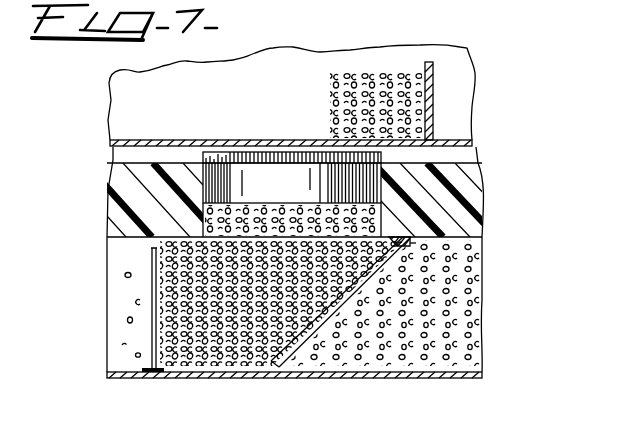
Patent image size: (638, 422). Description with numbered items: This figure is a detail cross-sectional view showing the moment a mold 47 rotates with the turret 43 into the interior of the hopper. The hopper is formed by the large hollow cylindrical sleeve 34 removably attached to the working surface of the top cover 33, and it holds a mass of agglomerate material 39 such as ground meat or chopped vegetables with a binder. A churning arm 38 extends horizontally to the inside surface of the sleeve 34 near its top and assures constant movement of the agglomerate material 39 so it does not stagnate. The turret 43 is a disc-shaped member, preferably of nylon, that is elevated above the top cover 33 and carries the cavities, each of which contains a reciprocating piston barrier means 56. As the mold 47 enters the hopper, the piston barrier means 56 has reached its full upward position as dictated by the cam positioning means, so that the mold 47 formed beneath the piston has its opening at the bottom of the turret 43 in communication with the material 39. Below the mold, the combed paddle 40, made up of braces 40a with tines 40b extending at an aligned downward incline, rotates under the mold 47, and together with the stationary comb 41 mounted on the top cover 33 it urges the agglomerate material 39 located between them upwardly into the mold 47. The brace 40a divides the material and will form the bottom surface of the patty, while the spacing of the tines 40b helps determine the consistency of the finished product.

The top cover 33 is at (460, 381).
The cylindrical sleeve 34 is at (533, 302).
The churning arm 38 is at (440, 102).
The agglomerate material 39 is at (362, 342).
The combed paddle 40 is at (385, 266).
The brace 40a is at (394, 255).
The tines 40b is at (352, 287).
The stationary comb 41 is at (216, 224).
The turret 43 is at (412, 192).
The mold 47 is at (156, 251).
The piston barrier means 56 is at (283, 183).